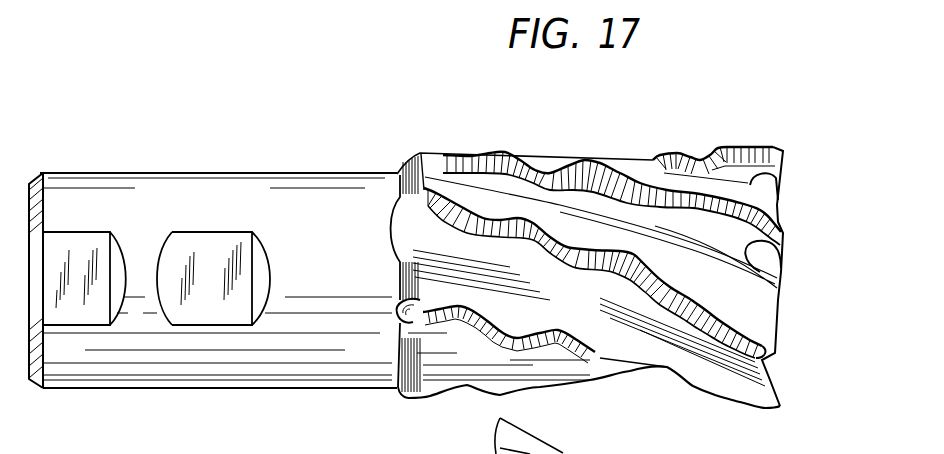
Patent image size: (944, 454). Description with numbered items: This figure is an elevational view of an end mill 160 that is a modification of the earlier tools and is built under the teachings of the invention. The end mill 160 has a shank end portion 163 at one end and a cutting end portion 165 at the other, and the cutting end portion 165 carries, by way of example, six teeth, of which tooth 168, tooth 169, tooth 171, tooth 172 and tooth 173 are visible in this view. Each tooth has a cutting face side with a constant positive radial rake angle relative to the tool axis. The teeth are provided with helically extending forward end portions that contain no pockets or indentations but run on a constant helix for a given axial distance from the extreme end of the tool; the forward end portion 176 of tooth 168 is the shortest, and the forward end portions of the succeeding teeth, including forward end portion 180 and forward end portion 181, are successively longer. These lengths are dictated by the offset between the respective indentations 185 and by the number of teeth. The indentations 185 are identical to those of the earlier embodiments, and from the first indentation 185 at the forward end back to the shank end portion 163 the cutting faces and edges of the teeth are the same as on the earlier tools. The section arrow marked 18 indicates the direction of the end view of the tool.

The end mill 160 is at (376, 125).
The shank end portion 163 is at (200, 172).
The cutting end portion 165 is at (587, 143).
The tooth 168 is at (650, 158).
The tooth 169 is at (697, 152).
The tooth 171 is at (440, 387).
The tooth 172 is at (613, 347).
The tooth 173 is at (478, 200).
The forward end portion 176 is at (780, 210).
The forward end portion 180 is at (740, 393).
The forward end portion 181 is at (773, 327).
The indentation 185 is at (512, 162).
The section line 18 is at (830, 70).